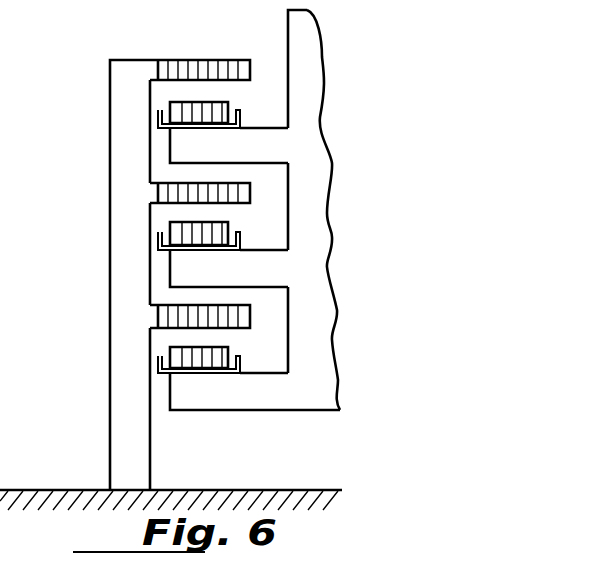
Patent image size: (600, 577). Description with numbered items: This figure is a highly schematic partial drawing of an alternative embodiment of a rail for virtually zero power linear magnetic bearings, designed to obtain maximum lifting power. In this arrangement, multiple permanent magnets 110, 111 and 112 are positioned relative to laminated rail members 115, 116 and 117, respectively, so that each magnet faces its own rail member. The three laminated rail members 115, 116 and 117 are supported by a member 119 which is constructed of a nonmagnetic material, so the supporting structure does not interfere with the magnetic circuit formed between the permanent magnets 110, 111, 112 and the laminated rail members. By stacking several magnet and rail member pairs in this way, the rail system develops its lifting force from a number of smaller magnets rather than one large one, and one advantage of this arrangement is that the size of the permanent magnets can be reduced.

The permanent magnet 110 is at (230, 100).
The permanent magnet 111 is at (226, 228).
The permanent magnet 112 is at (226, 352).
The laminated rail member 115 is at (196, 60).
The laminated rail member 116 is at (176, 184).
The laminated rail member 117 is at (177, 305).
The member 119 is at (111, 351).